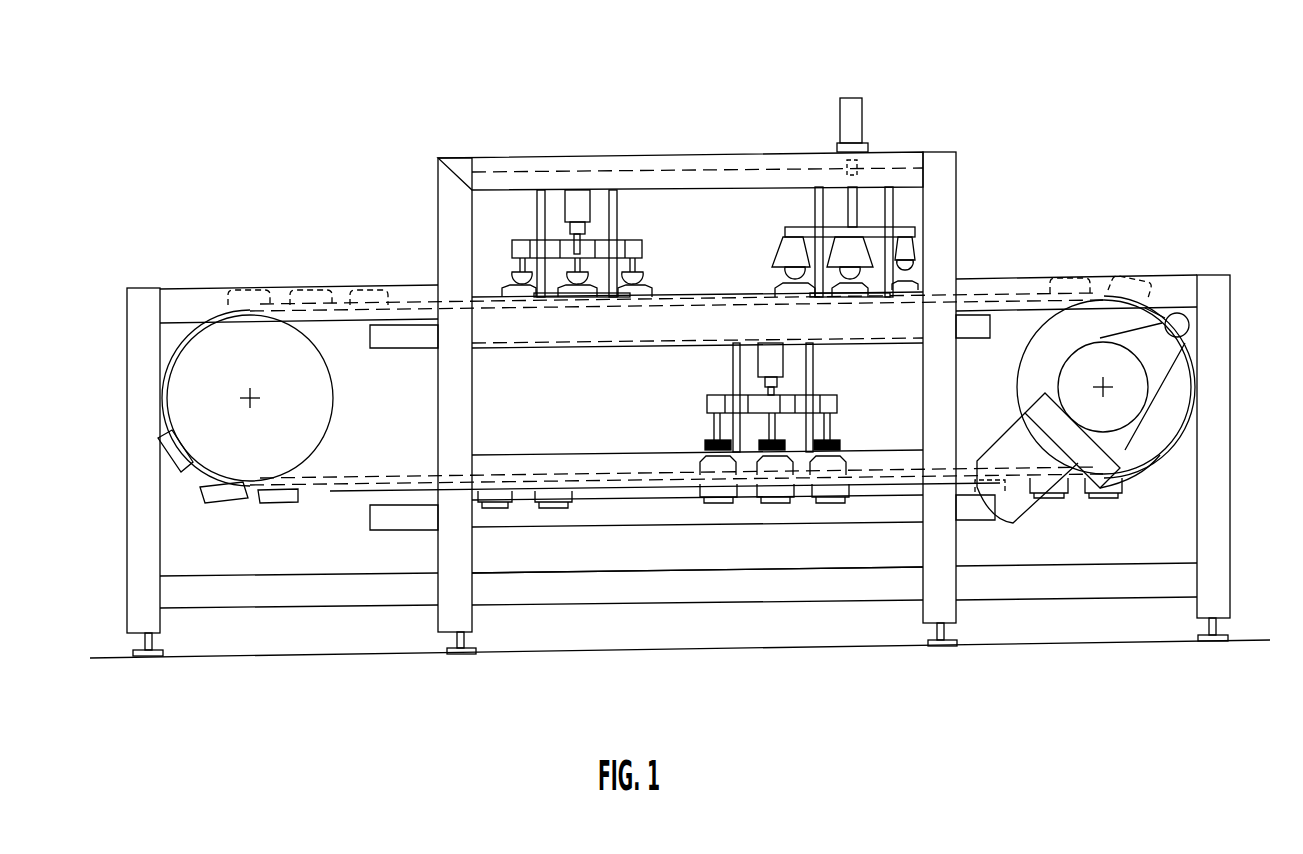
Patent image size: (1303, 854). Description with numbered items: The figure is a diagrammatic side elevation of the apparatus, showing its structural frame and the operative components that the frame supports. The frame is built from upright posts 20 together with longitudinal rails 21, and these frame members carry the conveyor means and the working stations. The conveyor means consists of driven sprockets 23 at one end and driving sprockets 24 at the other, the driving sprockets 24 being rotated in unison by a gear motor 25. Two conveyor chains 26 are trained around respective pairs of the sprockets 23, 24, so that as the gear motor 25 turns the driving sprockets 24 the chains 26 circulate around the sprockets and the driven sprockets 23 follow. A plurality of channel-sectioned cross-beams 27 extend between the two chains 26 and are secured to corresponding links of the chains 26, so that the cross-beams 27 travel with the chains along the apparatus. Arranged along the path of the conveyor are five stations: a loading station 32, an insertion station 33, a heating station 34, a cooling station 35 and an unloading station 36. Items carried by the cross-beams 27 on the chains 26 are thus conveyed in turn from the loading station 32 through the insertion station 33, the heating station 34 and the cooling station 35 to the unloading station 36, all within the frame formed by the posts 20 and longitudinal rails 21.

The posts 20 is at (715, 387).
The longitudinal rails 21 is at (683, 378).
The driven sprockets 23 is at (195, 352).
The driving sprockets 24 is at (1160, 420).
The gear motor 25 is at (1045, 561).
The conveyor chains 26 is at (678, 521).
The channel-sectioned cross-beams 27 is at (456, 583).
The loading station 32 is at (282, 168).
The insertion station 33 is at (607, 152).
The heating station 34 is at (904, 152).
The cooling station 35 is at (1121, 403).
The unloading station 36 is at (697, 645).